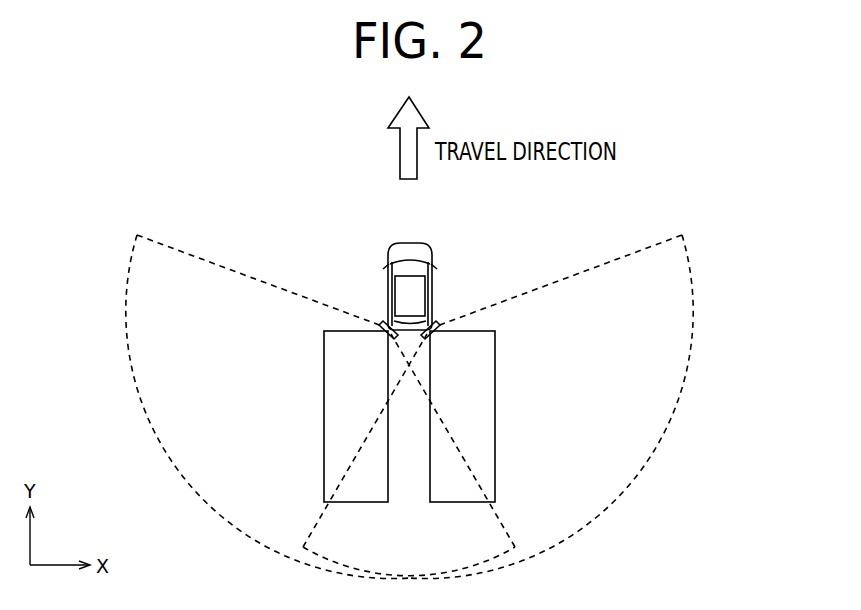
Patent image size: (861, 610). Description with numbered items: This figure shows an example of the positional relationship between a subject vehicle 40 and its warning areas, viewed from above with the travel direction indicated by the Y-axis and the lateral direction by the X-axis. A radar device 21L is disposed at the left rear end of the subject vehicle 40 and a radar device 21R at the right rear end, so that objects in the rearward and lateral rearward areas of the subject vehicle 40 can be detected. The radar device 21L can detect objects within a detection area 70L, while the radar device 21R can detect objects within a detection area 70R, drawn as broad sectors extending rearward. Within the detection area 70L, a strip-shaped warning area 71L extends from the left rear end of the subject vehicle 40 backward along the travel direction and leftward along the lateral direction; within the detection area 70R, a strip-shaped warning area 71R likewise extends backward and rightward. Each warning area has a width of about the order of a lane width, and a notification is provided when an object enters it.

The subject vehicle 40 is at (412, 243).
The radar device 21L is at (380, 324).
The radar device 21R is at (439, 324).
The detection area 70L is at (193, 256).
The detection area 70R is at (626, 256).
The warning area 71L is at (324, 464).
The warning area 71R is at (495, 464).